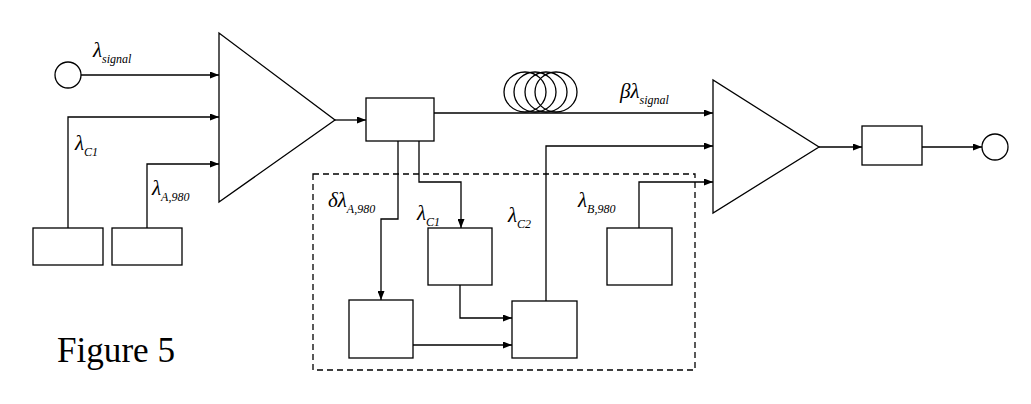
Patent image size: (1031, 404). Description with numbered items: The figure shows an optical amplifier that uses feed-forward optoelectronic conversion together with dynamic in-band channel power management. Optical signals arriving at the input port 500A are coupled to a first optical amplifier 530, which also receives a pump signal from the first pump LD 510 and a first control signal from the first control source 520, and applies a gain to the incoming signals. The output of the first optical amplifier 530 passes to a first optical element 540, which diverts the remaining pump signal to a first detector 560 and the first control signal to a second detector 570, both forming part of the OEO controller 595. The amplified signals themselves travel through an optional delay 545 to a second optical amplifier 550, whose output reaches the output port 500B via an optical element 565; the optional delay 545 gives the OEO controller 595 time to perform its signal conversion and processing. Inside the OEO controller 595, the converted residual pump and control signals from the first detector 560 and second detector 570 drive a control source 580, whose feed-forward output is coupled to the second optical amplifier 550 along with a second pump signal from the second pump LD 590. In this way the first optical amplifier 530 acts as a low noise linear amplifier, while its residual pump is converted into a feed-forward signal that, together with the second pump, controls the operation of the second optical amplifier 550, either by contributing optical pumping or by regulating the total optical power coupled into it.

The input port 500A is at (42, 75).
The output port 500B is at (993, 164).
The first pump LD 510 is at (165, 214).
The first control source 520 is at (126, 191).
The first optical amplifier 530 is at (277, 117).
The first optical element 540 is at (400, 119).
The optional delay 545 is at (540, 78).
The second optical amplifier 550 is at (766, 146).
The first detector 560 is at (381, 249).
The optical element 565 is at (892, 145).
The second detector 570 is at (455, 213).
The control source 580 is at (563, 252).
The second pump LD 590 is at (660, 233).
The OEO controller 595 is at (504, 272).